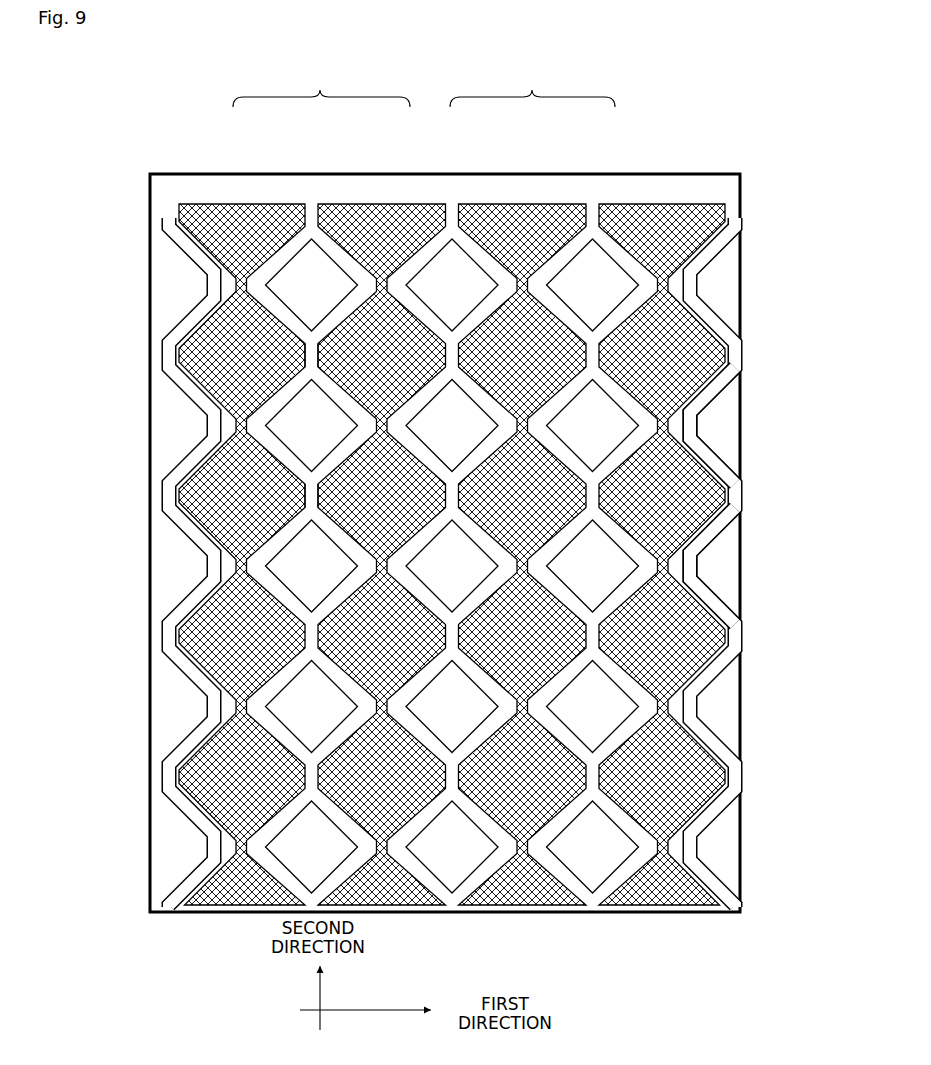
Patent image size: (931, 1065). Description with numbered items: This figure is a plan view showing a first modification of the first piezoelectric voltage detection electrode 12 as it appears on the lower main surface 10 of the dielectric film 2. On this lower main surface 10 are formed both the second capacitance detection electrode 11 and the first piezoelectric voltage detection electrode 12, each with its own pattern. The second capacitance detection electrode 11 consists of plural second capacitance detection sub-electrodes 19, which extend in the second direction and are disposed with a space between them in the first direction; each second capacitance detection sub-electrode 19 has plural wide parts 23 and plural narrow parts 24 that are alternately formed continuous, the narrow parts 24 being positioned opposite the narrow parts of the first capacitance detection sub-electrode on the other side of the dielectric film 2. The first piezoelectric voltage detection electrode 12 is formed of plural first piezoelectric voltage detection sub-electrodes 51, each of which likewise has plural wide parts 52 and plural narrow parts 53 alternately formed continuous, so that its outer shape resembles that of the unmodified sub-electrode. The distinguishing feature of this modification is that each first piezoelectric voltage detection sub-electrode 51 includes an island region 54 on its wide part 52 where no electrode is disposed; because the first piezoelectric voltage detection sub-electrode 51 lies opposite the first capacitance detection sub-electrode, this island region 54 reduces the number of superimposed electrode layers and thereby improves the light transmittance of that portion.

The dielectric film 2 is at (742, 184).
The lower main surface 10 is at (727, 190).
The second capacitance detection electrode 11 is at (321, 84).
The first piezoelectric voltage detection electrode 12 is at (532, 84).
The second capacitance detection sub-electrode 19 is at (245, 203).
The first piezoelectric voltage detection sub-electrode 51 is at (452, 215).
The wide part 52 is at (205, 274).
The narrow part 53 is at (300, 350).
The island region 54 is at (300, 291).
The wide part 23 is at (742, 354).
The narrow part 24 is at (696, 421).